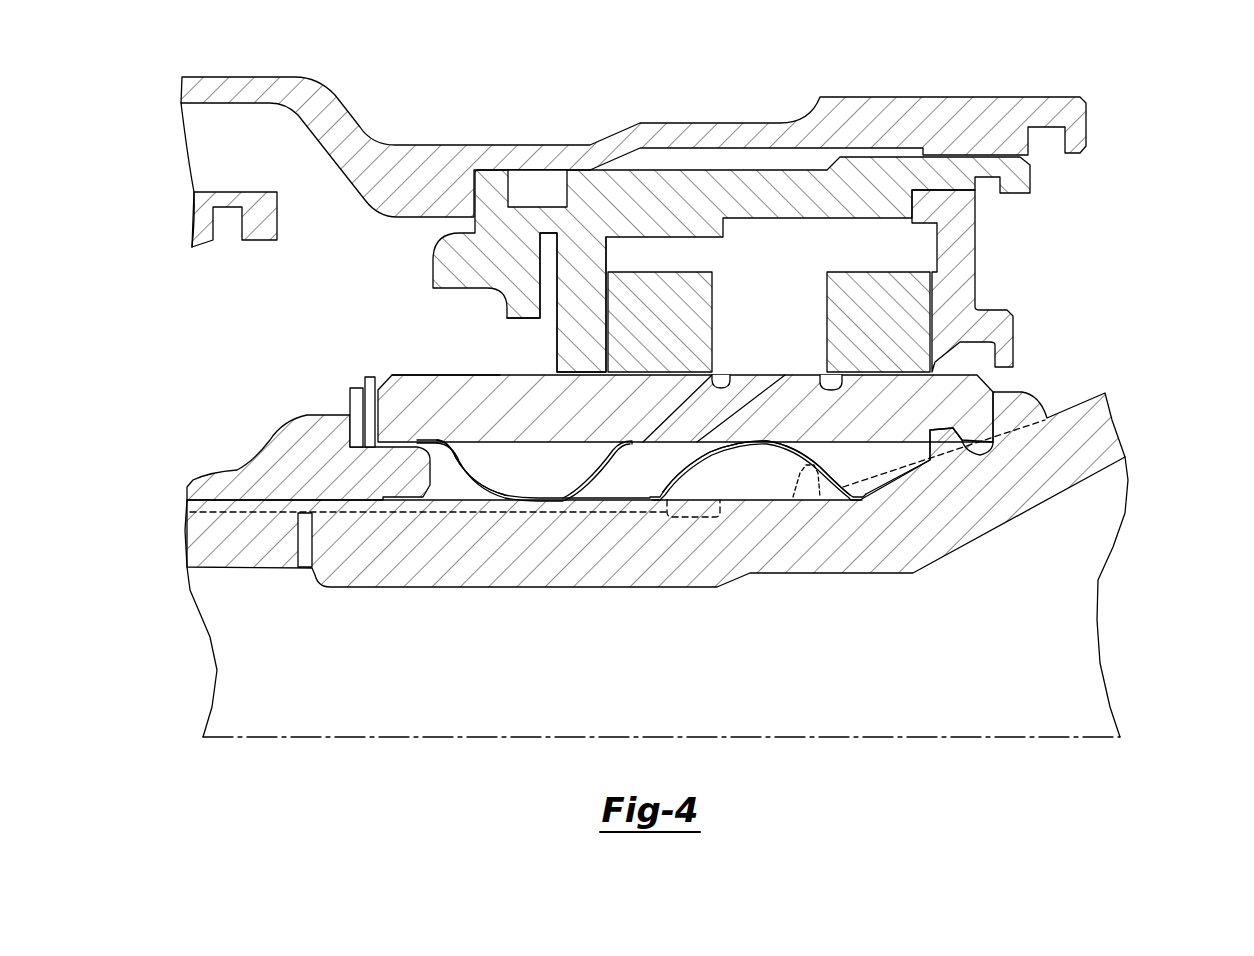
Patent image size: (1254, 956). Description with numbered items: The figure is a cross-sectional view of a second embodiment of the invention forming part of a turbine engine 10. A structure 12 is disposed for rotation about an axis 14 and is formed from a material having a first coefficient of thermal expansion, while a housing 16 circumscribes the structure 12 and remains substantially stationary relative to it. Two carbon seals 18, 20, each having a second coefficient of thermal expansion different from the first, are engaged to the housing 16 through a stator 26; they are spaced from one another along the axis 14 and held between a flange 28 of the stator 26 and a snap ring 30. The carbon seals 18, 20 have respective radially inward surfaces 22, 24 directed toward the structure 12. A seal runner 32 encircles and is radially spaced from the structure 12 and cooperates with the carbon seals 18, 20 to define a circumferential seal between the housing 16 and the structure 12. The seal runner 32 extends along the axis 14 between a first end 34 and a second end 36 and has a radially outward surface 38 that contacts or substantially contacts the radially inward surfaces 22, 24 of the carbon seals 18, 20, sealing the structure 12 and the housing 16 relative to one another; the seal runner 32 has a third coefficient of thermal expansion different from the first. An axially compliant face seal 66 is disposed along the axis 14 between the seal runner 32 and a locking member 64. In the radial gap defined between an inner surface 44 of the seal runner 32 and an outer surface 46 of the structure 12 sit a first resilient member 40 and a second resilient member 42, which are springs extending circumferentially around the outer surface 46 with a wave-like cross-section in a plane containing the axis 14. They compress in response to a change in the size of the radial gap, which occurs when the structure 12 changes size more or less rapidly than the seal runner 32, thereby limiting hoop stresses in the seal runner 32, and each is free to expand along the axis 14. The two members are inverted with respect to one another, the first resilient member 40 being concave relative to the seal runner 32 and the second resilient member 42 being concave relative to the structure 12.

The turbine engine 10 is at (1125, 92).
The structure 12 is at (1003, 510).
The axis 14 is at (1027, 738).
The housing 16 is at (957, 123).
The carbon seal 18 is at (645, 335).
The carbon seal 20 is at (865, 335).
The radially inward surface 22 is at (721, 386).
The radially inward surface 24 is at (831, 388).
The stator 26 is at (697, 203).
The flange 28 is at (582, 260).
The snap ring 30 is at (948, 227).
The seal runner 32 is at (583, 417).
The first end 34 is at (392, 364).
The second end 36 is at (1023, 380).
The radially outward surface 38 is at (430, 375).
The first resilient member 40 is at (456, 478).
The second resilient member 42 is at (717, 455).
The inner surface 44 is at (460, 443).
The outer surface 46 is at (603, 490).
The locking member 64 is at (303, 430).
The axially compliant face seal 66 is at (353, 402).